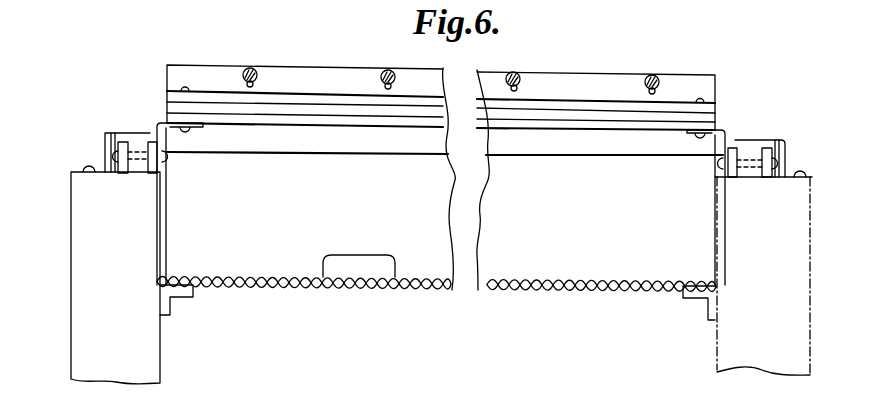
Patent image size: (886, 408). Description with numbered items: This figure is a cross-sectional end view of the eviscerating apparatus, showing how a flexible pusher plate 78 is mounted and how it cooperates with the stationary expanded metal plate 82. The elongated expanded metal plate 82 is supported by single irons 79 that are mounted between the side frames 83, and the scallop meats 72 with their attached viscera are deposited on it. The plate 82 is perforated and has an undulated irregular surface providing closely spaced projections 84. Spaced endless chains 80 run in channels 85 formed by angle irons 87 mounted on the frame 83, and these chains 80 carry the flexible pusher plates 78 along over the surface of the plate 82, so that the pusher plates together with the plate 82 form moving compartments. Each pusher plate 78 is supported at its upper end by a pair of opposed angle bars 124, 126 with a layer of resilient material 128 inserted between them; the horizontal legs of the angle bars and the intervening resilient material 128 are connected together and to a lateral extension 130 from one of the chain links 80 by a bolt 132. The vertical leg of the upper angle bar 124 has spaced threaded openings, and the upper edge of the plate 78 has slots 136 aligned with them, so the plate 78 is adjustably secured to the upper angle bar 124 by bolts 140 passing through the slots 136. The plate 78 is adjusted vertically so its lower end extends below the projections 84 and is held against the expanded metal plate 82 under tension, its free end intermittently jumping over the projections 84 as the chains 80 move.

The scallop meats 72 is at (360, 265).
The flexible pusher plate 78 is at (255, 250).
The single iron 79 is at (165, 305).
The endless chain 80 is at (140, 163).
The expanded metal plate 82 is at (538, 279).
The side frame 83 is at (80, 352).
The projections 84 is at (613, 282).
The channel 85 is at (110, 138).
The angle iron 87 is at (105, 150).
The upper angle bar 124 is at (286, 76).
The lower angle bar 126 is at (307, 155).
The layer of resilient material 128 is at (178, 108).
The lateral extension 130 is at (198, 126).
The bolt 132 is at (185, 88).
The slot 136 is at (385, 87).
The bolt 140 is at (388, 70).